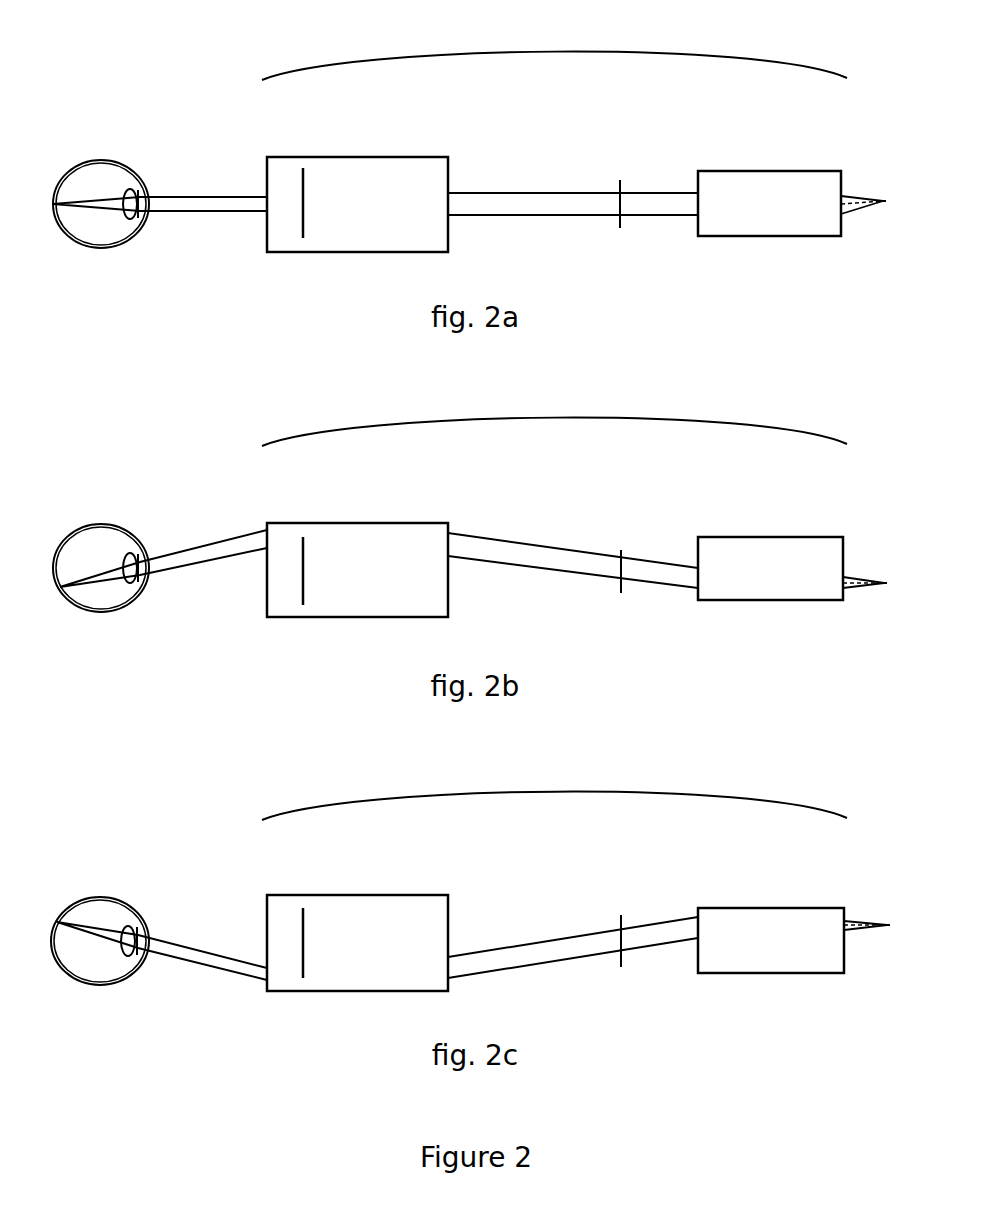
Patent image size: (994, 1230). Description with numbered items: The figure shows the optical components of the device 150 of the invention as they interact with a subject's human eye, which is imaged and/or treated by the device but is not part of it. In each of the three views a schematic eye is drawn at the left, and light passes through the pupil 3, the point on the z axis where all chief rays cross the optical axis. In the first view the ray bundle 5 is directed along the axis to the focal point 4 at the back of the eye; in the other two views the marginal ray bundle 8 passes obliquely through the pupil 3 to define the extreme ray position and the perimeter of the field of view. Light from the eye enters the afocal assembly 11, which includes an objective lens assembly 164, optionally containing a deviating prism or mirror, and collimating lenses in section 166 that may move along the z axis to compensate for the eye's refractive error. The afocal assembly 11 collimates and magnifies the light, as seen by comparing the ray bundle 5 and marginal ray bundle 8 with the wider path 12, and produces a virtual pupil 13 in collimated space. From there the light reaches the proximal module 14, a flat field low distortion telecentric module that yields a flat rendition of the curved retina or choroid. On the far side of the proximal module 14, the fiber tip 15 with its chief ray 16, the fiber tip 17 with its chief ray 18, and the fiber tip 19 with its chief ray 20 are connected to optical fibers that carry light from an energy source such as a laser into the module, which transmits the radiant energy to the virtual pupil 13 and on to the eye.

In FIG. 2a, the device 150 is at (554, 48).
In FIG. 2b, the device 150 is at (554, 414).
In FIG. 2c, the device 150 is at (554, 789).
In FIG. 2a, the focal point 4 is at (72, 180).
In FIG. 2a, the pupil 3 is at (140, 178).
In FIG. 2b, the pupil 3 is at (140, 543).
In FIG. 2c, the pupil 3 is at (138, 912).
In FIG. 2a, the ray bundle 5 is at (195, 192).
In FIG. 2a, the afocal assembly 11 is at (352, 152).
In FIG. 2b, the afocal assembly 11 is at (352, 518).
In FIG. 2c, the afocal assembly 11 is at (352, 893).
In FIG. 2a, the objective lens assembly 164 is at (287, 165).
In FIG. 2b, the objective lens assembly 164 is at (287, 531).
In FIG. 2c, the objective lens assembly 164 is at (287, 905).
In FIG. 2a, the collimating lenses section 166 is at (405, 165).
In FIG. 2b, the collimating lenses section 166 is at (405, 531).
In FIG. 2c, the collimating lenses section 166 is at (405, 905).
In FIG. 2a, the path 12 is at (525, 188).
In FIG. 2b, the path 12 is at (525, 537).
In FIG. 2c, the path 12 is at (525, 938).
In FIG. 2a, the virtual pupil 13 is at (620, 182).
In FIG. 2b, the virtual pupil 13 is at (621, 550).
In FIG. 2c, the virtual pupil 13 is at (621, 915).
In FIG. 2a, the proximal module 14 is at (792, 165).
In FIG. 2b, the proximal module 14 is at (792, 533).
In FIG. 2c, the proximal module 14 is at (792, 906).
In FIG. 2a, the chief ray 16 is at (848, 197).
In FIG. 2a, the fiber tip 15 is at (887, 200).
In FIG. 2b, the marginal ray bundle 8 is at (61, 586).
In FIG. 2b, the chief ray 18 is at (848, 577).
In FIG. 2b, the fiber tip 17 is at (887, 582).
In FIG. 2c, the chief ray 20 is at (848, 920).
In FIG. 2c, the fiber tip 19 is at (890, 925).